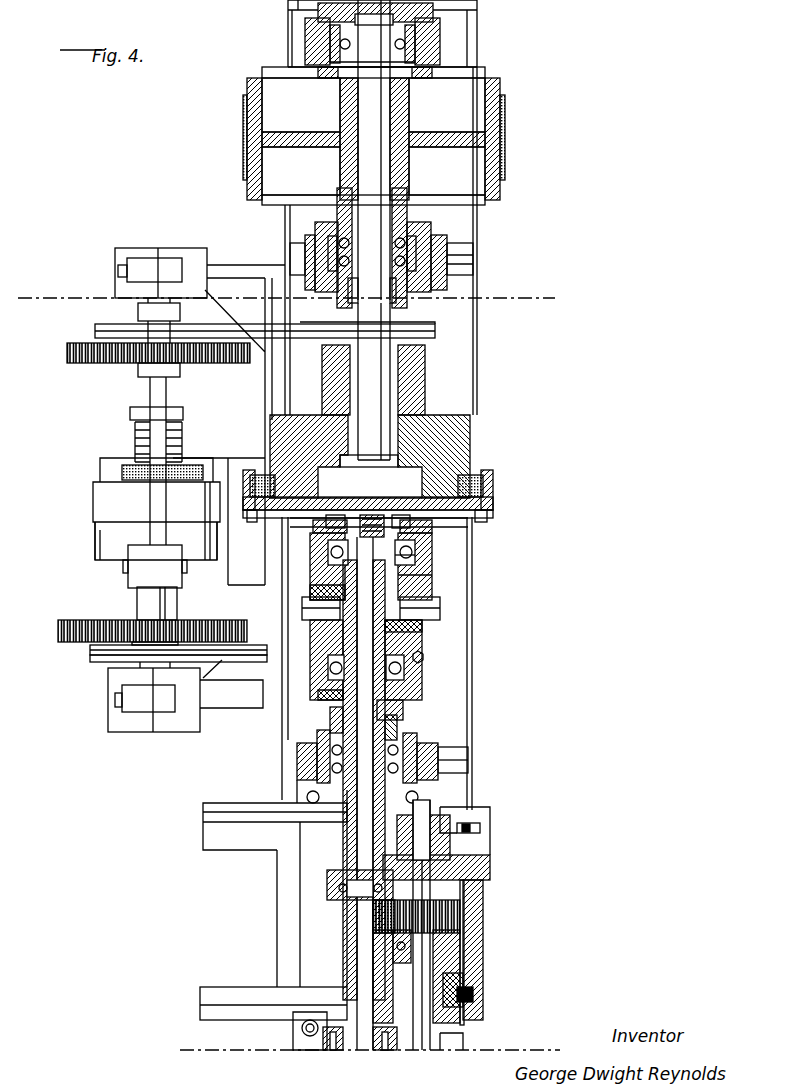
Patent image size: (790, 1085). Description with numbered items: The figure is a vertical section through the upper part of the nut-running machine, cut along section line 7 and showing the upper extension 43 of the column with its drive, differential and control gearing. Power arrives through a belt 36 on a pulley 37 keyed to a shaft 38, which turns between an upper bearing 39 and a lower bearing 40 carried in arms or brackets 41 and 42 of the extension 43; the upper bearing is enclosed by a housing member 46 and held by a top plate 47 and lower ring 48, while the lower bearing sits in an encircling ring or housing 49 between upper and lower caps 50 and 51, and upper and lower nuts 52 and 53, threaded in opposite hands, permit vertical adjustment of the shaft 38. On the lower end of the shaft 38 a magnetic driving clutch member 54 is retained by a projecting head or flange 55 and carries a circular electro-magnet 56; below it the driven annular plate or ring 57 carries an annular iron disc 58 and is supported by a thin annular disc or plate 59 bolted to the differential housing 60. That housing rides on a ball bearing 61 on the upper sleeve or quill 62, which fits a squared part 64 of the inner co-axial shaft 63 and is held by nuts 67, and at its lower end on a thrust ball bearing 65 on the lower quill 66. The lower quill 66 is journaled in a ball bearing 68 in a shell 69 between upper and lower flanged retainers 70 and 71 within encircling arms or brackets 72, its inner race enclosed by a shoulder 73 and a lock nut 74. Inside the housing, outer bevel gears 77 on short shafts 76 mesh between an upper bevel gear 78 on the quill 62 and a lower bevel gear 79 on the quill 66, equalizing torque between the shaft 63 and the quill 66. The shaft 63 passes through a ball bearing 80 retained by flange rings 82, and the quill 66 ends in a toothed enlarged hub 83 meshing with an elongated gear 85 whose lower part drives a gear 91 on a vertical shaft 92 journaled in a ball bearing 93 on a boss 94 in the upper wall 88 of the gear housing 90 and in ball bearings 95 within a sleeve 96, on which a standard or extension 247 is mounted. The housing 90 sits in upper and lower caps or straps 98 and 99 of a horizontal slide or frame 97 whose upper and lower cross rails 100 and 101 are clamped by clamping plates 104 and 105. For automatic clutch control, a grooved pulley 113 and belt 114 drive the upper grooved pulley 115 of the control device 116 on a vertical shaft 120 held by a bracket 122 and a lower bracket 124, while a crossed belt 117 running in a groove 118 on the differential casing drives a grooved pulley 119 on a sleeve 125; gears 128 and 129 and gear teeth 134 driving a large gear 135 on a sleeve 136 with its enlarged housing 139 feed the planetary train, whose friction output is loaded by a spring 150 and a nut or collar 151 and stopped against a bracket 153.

The section line 7- 7 is at (281, 304).
The belt 36 is at (247, 146).
The pulley 37 is at (250, 80).
The shaft 38 is at (358, 92).
The upper bearing 39 is at (440, 42).
The lower bearing 40 is at (448, 247).
The arms or brackets 41 is at (418, 50).
The arms or brackets 42 is at (305, 250).
The upper extension 43 is at (478, 63).
The lock nut 46 is at (435, 10).
The top plate 47 is at (300, 6).
The lower ring 48 is at (410, 70).
The encircling ring or housing 49 is at (430, 240).
The upper cap 50 is at (416, 222).
The lower cap 51 is at (398, 299).
The upper nut 52 is at (338, 222).
The lower nut 53 is at (348, 300).
The magnetic driving clutch member 54 is at (470, 428).
The projecting head or flange 55 is at (369, 450).
The circular electro-magnet 56 is at (493, 480).
The annular plate or ring 57 is at (490, 518).
The annular iron disc 58 is at (494, 504).
The thin annular disc or plate 59 is at (470, 522).
The differential housing 60 is at (420, 557).
The ball bearing 61 is at (418, 568).
The sleeve or quill 62 is at (418, 538).
The inner co-axial shaft 63 is at (310, 569).
The squared part 64 is at (313, 526).
The thrust ball bearing 65 is at (416, 676).
The lower quill 66 is at (403, 706).
The nuts 67 is at (374, 514).
The ball bearing 68 is at (440, 753).
The shell 69 is at (440, 766).
The upper flanged retainer 70 is at (398, 720).
The lower flanged retainer 71 is at (420, 797).
The encircling arms or brackets 72 is at (438, 743).
The shoulder 73 is at (318, 801).
The lock nut 74 is at (330, 715).
The short shafts 76 is at (425, 608).
The outer bevel gears 77 is at (422, 632).
The upper bevel gear 78 is at (318, 590).
The lower bevel gear 79 is at (312, 636).
The ball bearing 80 is at (380, 1048).
The flange rings 82 is at (333, 1027).
The enlarged hub 83 is at (327, 883).
The elongated gear 85 is at (372, 907).
The upper wall 88 is at (492, 868).
The gear housing 90 is at (462, 940).
The gear 91 is at (461, 918).
The vertical shaft 92 is at (465, 900).
The ball bearing 93 is at (481, 828).
The boss 94 is at (452, 845).
The ball bearings 95 is at (418, 956).
The sleeve 96 is at (463, 983).
The horizontal slide or frame 97 is at (276, 942).
The upper cap or strap 98 is at (462, 812).
The lower cap or strap 99 is at (473, 994).
The upper cross rail 100 is at (214, 848).
The lower cross rail 101 is at (200, 992).
The clamping plate 104 is at (296, 803).
The clamping plate 105 is at (300, 1043).
The grooved pulley 113 is at (428, 340).
The belt 114 is at (432, 335).
The upper grooved pulley 115 is at (120, 324).
The control device 116 is at (92, 500).
The crossed belt 117 is at (90, 652).
The groove 118 is at (316, 672).
The grooved pulley 119 is at (100, 663).
The vertical shaft 120 is at (168, 391).
The bracket 122 is at (195, 258).
The lower bracket 124 is at (142, 720).
The sleeve 125 is at (166, 606).
The gear 128 is at (140, 369).
The gear 129 is at (66, 352).
The gear teeth 134 is at (145, 610).
The large gear 135 is at (58, 622).
The sleeve 136 is at (180, 585).
The housing 139 is at (95, 542).
The spring 150 is at (135, 435).
The nut or collar 151 is at (130, 412).
The bracket 153 is at (200, 464).
The standard or extension 247 is at (463, 1041).